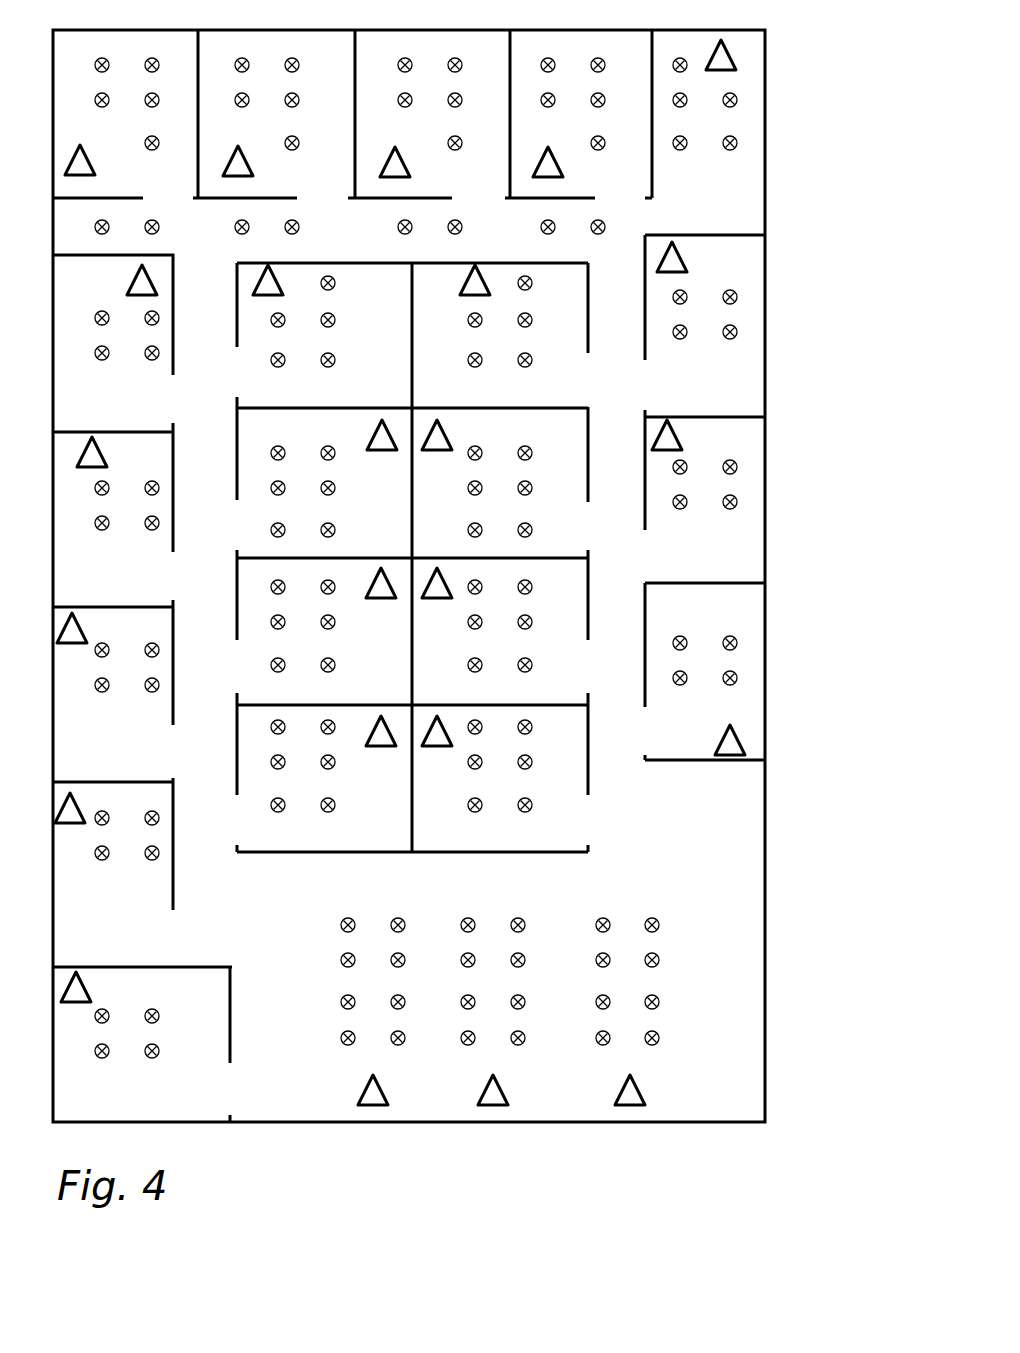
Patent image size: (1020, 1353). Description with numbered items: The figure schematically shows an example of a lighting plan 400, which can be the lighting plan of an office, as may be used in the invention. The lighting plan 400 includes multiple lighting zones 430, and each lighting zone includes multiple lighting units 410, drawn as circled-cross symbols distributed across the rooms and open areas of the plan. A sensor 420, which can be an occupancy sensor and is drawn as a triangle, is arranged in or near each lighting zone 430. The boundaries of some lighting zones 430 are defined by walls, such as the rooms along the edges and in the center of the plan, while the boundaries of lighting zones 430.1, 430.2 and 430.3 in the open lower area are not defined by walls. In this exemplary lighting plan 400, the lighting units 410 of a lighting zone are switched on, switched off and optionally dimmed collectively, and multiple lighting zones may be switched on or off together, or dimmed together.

The lighting plan 400 is at (840, 164).
The lighting unit 410 is at (738, 333).
The sensor 420 is at (682, 448).
The lighting zone 430 is at (714, 273).
The lighting zone 430.1 is at (339, 1079).
The lighting zone 430.2 is at (462, 1079).
The lighting zone 430.3 is at (589, 1079).